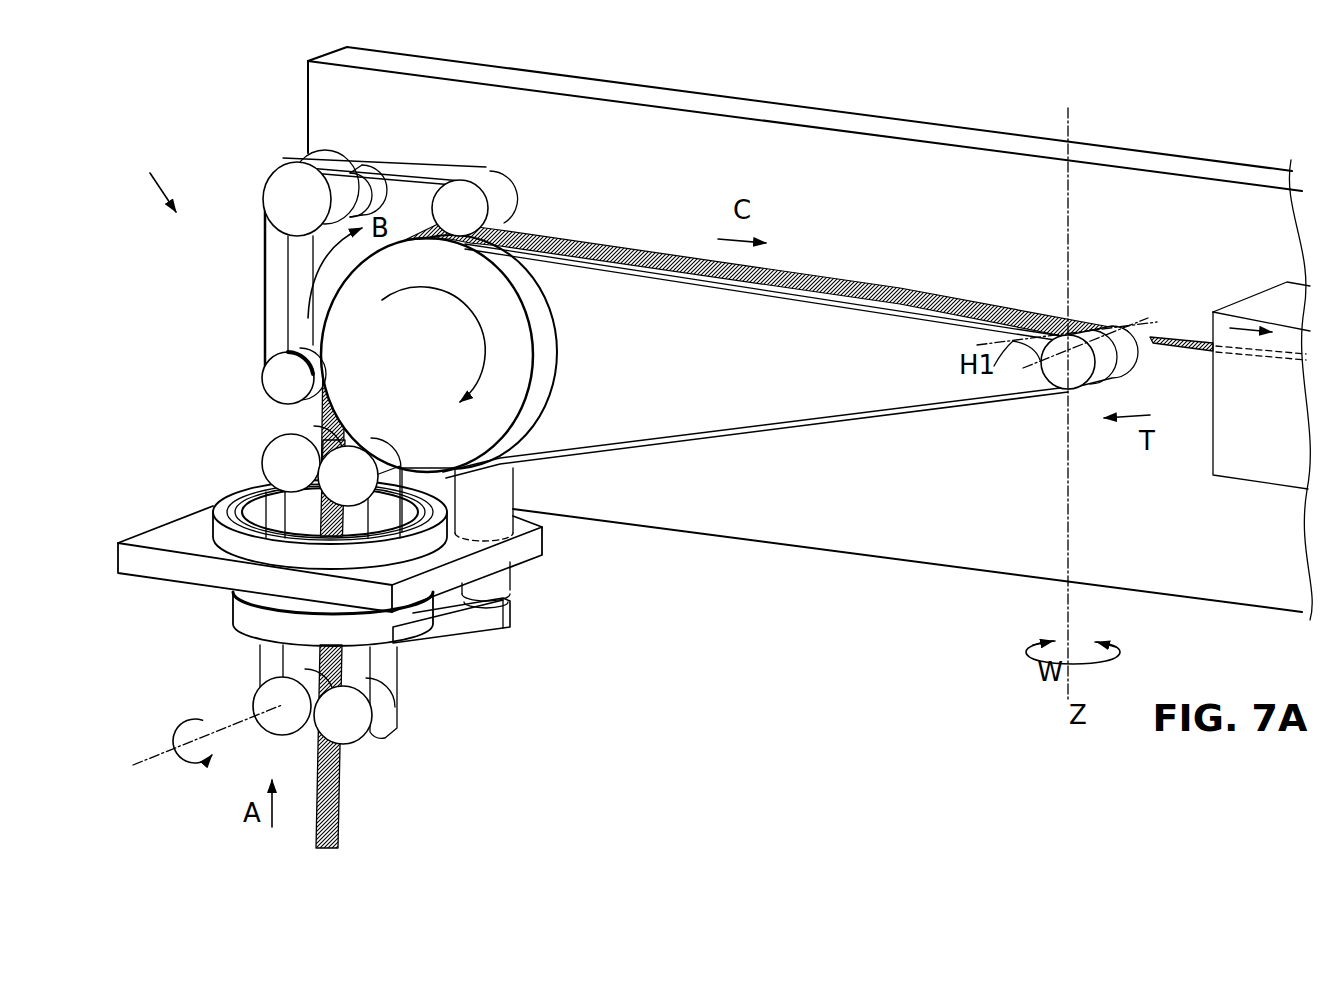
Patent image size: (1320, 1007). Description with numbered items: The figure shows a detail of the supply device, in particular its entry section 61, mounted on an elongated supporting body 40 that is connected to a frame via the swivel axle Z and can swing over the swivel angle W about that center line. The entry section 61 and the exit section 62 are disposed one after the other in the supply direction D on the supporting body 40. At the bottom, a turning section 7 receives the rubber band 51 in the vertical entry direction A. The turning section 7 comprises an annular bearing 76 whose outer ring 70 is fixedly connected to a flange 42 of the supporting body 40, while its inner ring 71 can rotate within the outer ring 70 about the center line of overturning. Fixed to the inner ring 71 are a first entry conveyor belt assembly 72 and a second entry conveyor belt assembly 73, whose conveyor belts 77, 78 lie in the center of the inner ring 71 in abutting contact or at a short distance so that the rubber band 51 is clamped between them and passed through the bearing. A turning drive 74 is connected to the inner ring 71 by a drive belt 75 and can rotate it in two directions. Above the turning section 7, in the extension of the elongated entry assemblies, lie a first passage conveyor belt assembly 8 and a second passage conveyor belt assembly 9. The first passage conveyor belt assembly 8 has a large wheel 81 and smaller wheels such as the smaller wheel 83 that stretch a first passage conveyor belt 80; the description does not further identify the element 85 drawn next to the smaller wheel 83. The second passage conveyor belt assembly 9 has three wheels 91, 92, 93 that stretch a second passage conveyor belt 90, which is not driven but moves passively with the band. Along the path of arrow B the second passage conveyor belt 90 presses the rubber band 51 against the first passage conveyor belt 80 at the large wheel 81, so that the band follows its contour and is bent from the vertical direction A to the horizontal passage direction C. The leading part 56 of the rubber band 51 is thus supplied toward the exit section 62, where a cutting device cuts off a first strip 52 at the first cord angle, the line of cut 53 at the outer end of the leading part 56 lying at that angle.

The turning section 7 is at (385, 693).
The first passage conveyor belt assembly 8 is at (545, 425).
The second passage conveyor belt assembly 9 is at (277, 286).
The supporting body 40 is at (920, 532).
The flange 42 is at (180, 537).
The rubber band 51 is at (320, 432).
The first strip 52 is at (1265, 355).
The line of cut 53 is at (1100, 336).
The leading part 56 is at (1073, 332).
The entry section 61 is at (152, 176).
The exit section 62 is at (1248, 300).
The outer ring 70 is at (213, 510).
The inner ring 71 is at (247, 498).
The first entry conveyor belt assembly 72 is at (388, 660).
The second entry conveyor belt assembly 73 is at (257, 682).
The turning drive 74 is at (498, 582).
The drive belt 75 is at (496, 615).
The annular bearing 76 is at (227, 537).
The conveyor belt 77 is at (390, 496).
The conveyor belt 78 is at (273, 490).
The first passage conveyor belt 80 is at (787, 420).
The large wheel 81 is at (542, 322).
The smaller wheel 83 is at (1087, 392).
The roller flange 85 is at (1112, 373).
The second passage conveyor belt 90 is at (436, 167).
The wheel 91 is at (266, 372).
The wheel 92 is at (502, 195).
The wheel 93 is at (277, 181).